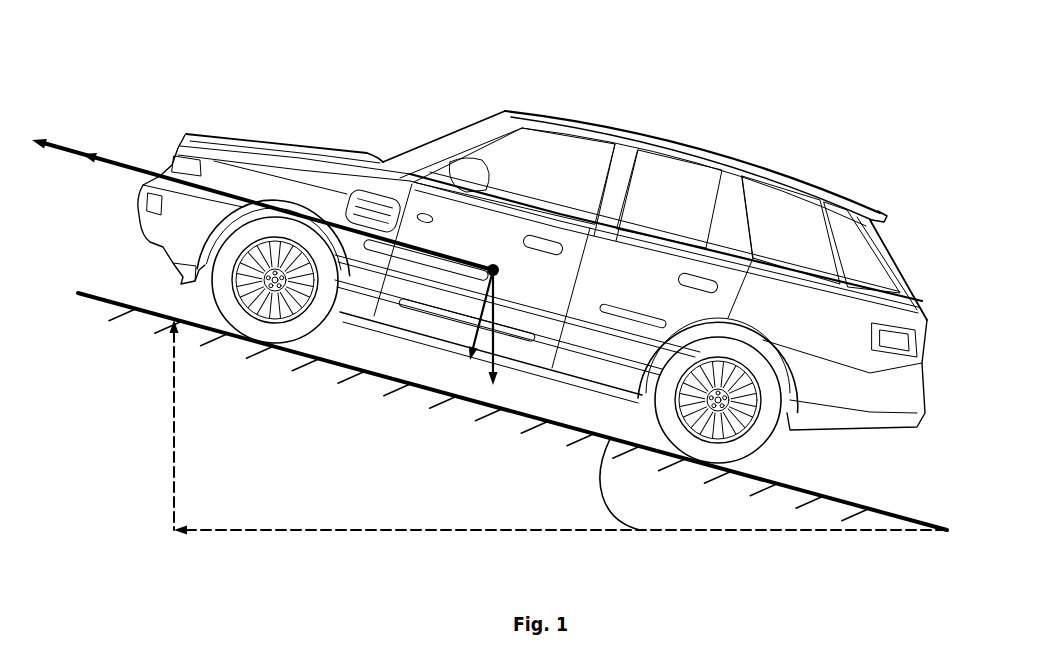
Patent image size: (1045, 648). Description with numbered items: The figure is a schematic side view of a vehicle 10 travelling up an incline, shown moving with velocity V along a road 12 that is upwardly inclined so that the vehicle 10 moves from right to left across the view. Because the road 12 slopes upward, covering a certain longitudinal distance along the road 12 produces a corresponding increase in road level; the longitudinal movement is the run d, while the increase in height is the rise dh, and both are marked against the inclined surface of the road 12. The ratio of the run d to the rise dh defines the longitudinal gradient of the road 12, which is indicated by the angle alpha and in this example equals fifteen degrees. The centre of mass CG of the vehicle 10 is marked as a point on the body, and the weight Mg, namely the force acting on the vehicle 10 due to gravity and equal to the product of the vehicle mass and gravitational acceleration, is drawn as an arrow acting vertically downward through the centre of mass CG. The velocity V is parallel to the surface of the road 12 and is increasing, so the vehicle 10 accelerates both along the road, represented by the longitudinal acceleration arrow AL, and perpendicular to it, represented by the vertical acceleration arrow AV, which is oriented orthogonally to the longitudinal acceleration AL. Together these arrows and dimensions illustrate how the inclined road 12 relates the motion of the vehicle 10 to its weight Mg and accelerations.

The vehicle 10 is at (334, 66).
The road 12 is at (107, 301).
The centre of mass CG is at (516, 271).
The longitudinal acceleration AL is at (262, 191).
The velocity V is at (84, 171).
The vertical acceleration AV is at (468, 324).
The weight Mg is at (512, 330).
The rise dh is at (144, 425).
The run d is at (560, 544).
The angle alpha is at (620, 484).